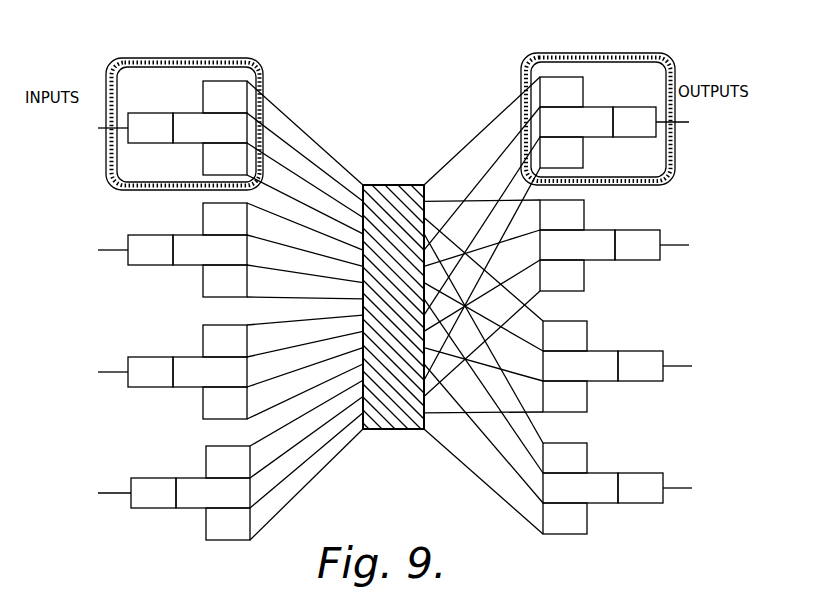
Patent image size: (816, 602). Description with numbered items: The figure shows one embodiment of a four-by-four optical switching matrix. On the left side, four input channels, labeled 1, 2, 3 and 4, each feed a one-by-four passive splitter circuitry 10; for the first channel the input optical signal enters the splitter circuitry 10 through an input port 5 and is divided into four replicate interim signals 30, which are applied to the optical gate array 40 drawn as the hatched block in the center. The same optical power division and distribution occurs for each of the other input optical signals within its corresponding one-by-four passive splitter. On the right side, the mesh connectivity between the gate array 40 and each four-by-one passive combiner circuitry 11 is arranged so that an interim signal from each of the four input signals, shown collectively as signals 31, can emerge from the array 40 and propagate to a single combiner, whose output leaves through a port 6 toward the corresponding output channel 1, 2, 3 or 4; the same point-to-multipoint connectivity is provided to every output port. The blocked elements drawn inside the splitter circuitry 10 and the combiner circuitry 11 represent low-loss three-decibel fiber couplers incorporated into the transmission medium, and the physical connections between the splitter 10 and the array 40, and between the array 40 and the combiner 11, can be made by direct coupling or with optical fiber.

The passive splitter circuitry 10 is at (118, 62).
The passive combiner circuitry 11 is at (665, 55).
The input port 5 is at (105, 129).
The output waveguide 6 is at (678, 124).
The replicate interim signals 30 is at (305, 203).
The interim signals 31 is at (503, 207).
The optical gate array 40 is at (382, 184).
The input/output channel 1 is at (88, 128).
The input/output channel 2 is at (88, 250).
The input/output channel 3 is at (88, 372).
The input/output channel 4 is at (88, 493).